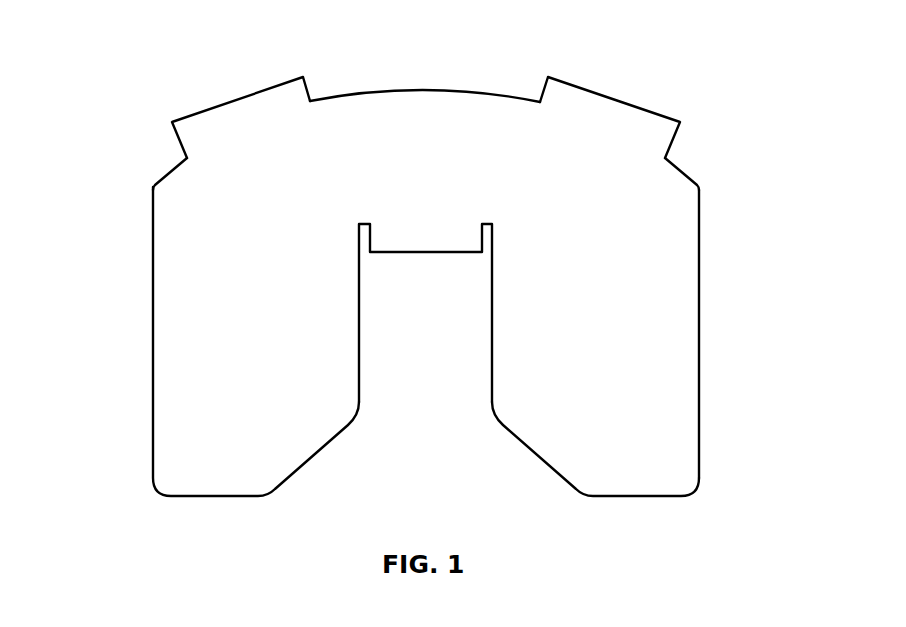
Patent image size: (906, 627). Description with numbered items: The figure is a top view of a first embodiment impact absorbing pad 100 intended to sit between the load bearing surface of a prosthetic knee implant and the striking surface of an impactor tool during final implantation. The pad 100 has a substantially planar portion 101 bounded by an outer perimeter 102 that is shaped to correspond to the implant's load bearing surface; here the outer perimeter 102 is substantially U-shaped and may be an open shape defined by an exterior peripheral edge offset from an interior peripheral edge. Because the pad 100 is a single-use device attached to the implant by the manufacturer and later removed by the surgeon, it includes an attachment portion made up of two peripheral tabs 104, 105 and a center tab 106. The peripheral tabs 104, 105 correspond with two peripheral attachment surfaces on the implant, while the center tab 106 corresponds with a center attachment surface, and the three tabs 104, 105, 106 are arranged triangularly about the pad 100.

The impact absorbing pad 100 is at (111, 72).
The planar portion 101 is at (670, 246).
The outer perimeter 102 is at (699, 306).
The peripheral tab 104 is at (240, 97).
The peripheral tab 105 is at (607, 93).
The center tab 106 is at (425, 252).